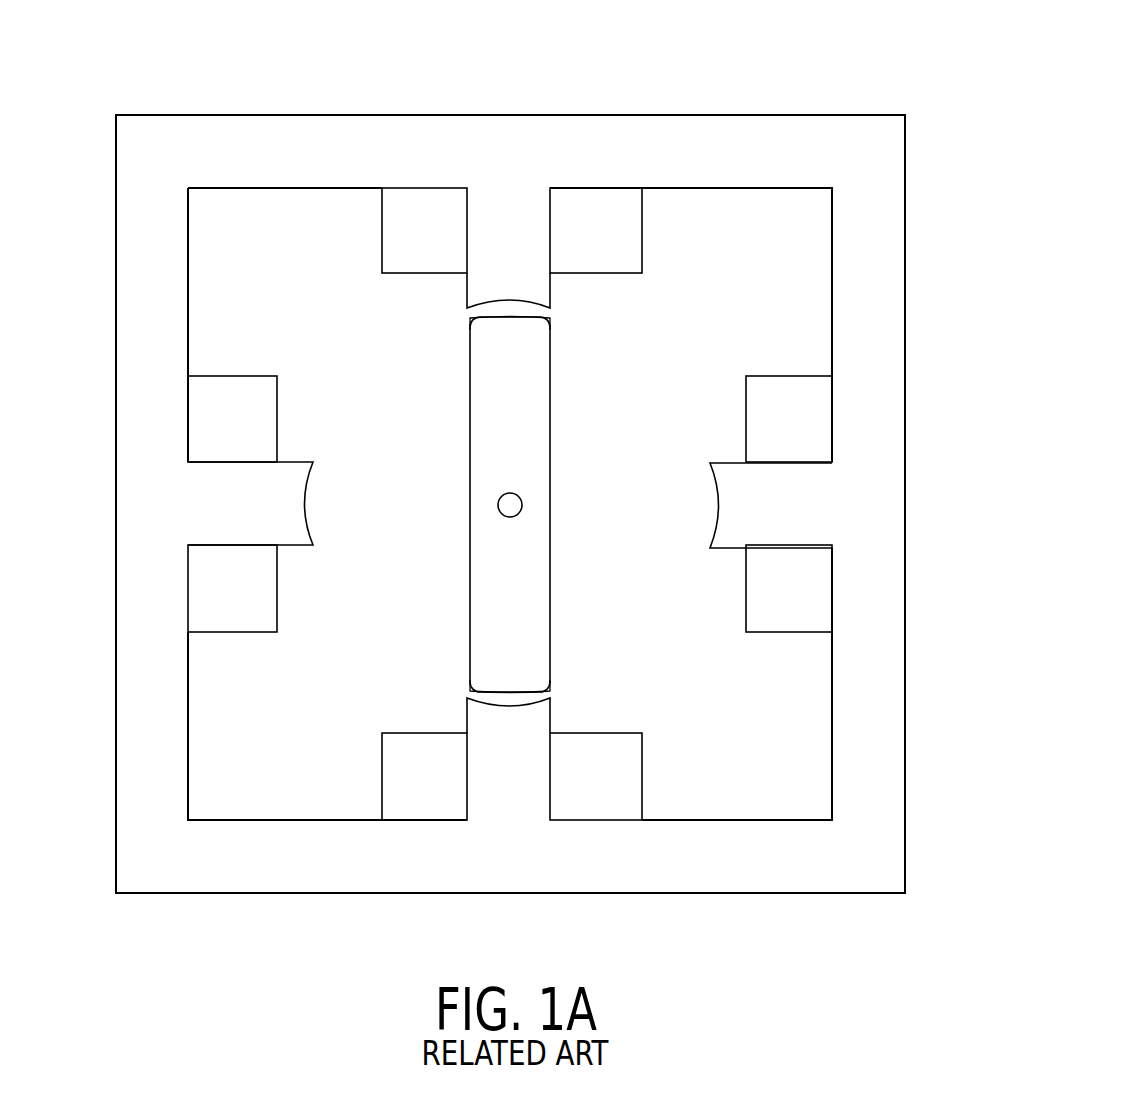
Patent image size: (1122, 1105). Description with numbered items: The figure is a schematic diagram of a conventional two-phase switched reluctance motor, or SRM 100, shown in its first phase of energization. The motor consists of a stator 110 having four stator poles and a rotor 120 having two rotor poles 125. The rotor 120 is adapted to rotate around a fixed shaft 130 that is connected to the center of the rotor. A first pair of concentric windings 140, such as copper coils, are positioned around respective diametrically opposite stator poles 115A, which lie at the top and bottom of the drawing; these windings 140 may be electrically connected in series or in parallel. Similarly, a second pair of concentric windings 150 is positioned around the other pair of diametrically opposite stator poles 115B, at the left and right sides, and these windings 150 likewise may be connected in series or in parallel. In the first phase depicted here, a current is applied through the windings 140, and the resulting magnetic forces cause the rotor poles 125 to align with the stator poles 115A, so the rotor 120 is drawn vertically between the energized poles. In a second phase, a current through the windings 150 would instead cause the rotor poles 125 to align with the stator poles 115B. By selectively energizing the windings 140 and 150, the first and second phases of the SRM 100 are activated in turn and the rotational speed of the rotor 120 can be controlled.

The two-phase SRM 100 is at (692, 90).
The stator 110 is at (286, 149).
The stator poles 115A is at (485, 247).
The stator poles 115B is at (208, 522).
The rotor 120 is at (492, 473).
The rotor poles 125 is at (519, 330).
The fixed shaft 130 is at (497, 503).
The concentric windings 140 is at (409, 247).
The concentric windings 150 is at (215, 432).